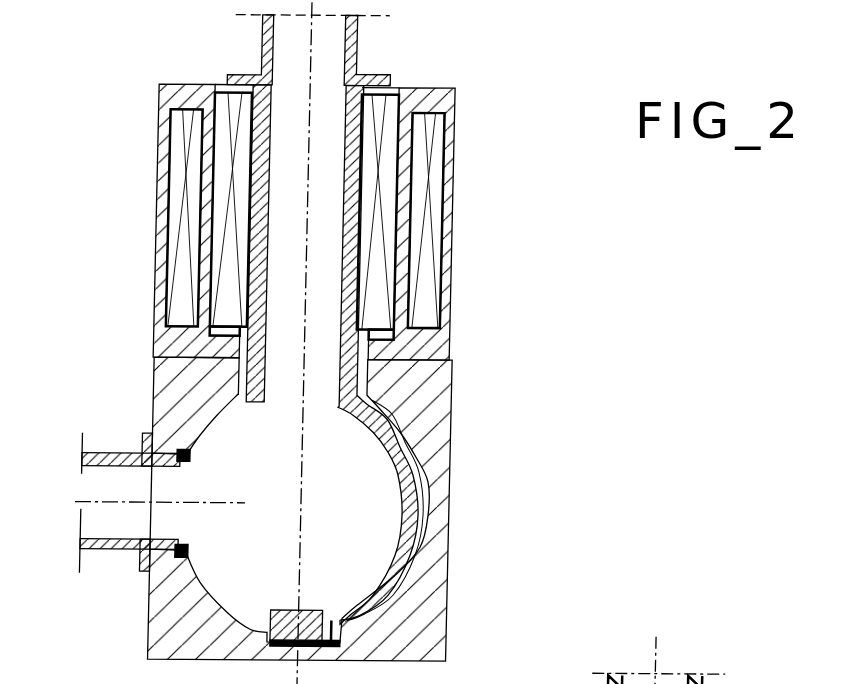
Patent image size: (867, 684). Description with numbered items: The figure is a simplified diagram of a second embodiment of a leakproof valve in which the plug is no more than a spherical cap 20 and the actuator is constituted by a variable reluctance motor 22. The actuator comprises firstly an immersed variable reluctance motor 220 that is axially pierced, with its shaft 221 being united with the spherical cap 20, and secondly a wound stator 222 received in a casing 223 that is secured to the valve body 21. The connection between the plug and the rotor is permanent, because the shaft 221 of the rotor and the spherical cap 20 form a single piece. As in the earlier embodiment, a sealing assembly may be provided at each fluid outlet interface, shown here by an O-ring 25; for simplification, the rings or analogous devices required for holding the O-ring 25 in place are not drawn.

The spherical cap 20 is at (423, 511).
The valve body 21 is at (184, 391).
The variable reluctance motor 22 is at (161, 159).
The O-ring 25 is at (187, 557).
The immersed variable reluctance motor 220 is at (405, 86).
The shaft 221 is at (383, 109).
The wound stator 222 is at (190, 304).
The casing 223 is at (190, 98).